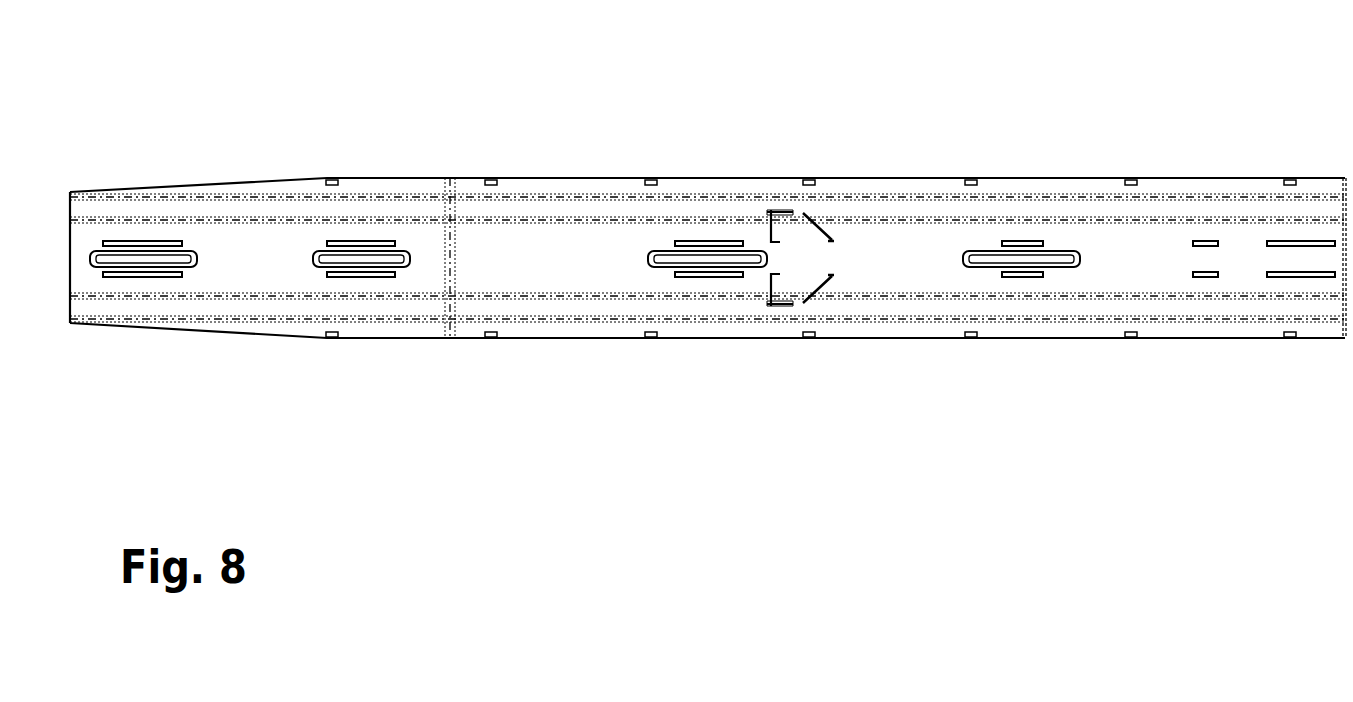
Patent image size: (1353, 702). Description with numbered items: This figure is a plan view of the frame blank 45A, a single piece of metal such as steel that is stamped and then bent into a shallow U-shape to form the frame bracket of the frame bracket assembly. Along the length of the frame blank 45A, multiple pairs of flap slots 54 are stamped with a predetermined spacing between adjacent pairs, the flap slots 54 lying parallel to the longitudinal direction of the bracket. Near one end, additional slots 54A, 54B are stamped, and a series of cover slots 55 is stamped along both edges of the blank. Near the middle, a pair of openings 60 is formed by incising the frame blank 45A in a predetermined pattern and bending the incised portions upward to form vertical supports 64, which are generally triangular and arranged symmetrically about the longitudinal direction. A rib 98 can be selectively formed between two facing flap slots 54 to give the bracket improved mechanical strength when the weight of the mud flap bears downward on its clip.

The frame blank 45A is at (1192, 183).
The flap slots 54 is at (585, 258).
The slots 54A is at (1277, 242).
The slots 54B is at (1205, 242).
The cover slots 55 is at (332, 180).
The openings 60 is at (773, 210).
The vertical supports 64 is at (797, 230).
The rib 98 is at (960, 270).